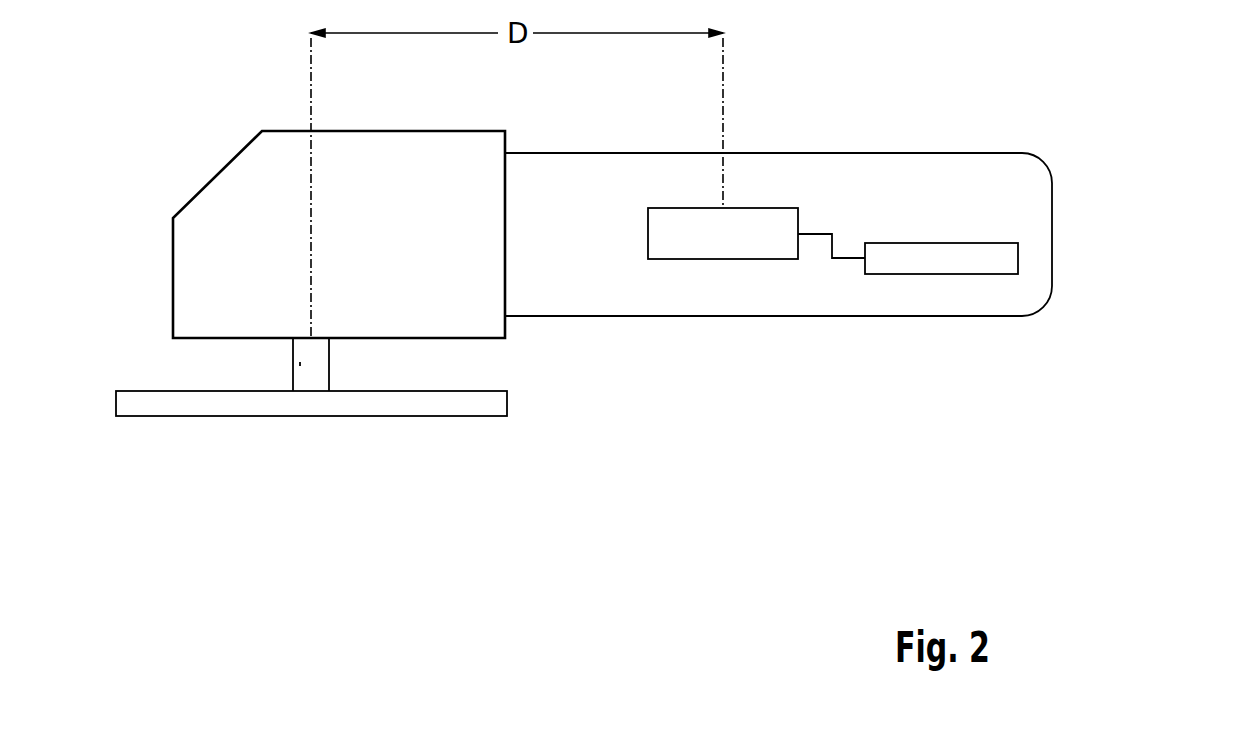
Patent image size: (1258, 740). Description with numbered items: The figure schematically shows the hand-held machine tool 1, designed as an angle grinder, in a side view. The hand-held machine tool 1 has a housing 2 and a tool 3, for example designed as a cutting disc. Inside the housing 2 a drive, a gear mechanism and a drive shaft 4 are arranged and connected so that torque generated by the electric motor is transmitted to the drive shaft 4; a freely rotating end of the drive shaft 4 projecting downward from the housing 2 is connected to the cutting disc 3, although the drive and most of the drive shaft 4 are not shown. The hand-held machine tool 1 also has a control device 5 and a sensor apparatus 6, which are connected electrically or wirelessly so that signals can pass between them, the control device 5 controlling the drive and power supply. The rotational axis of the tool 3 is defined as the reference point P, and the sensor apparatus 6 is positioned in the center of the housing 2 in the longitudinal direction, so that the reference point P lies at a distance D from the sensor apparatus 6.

The hand-held machine tool 1 is at (1133, 80).
The housing 2 is at (870, 175).
The tool 3 is at (402, 403).
The drive shaft 4 is at (302, 380).
The reference point P is at (300, 364).
The control device 5 is at (942, 262).
The sensor apparatus 6 is at (711, 245).